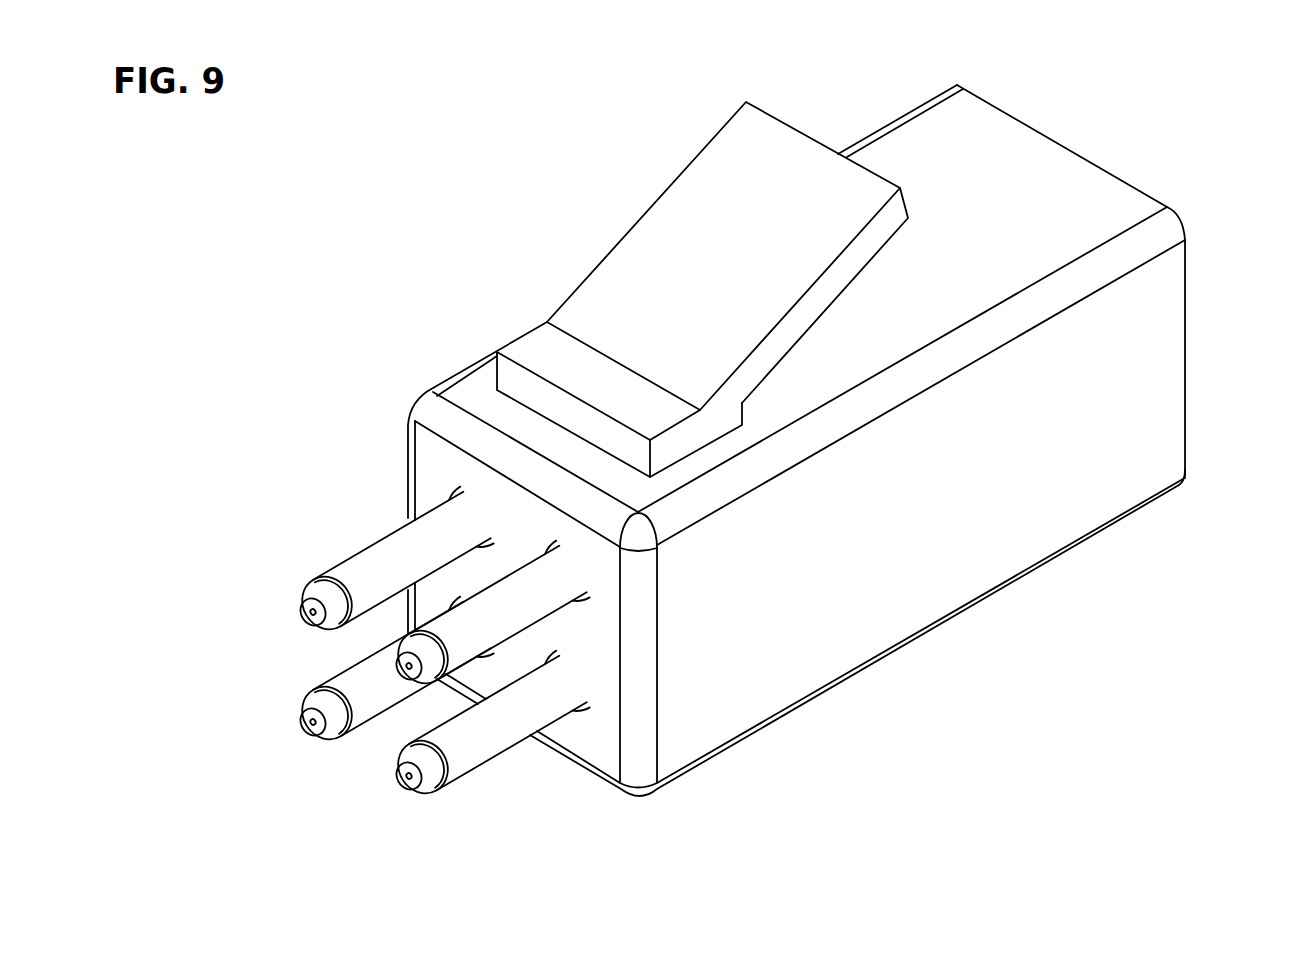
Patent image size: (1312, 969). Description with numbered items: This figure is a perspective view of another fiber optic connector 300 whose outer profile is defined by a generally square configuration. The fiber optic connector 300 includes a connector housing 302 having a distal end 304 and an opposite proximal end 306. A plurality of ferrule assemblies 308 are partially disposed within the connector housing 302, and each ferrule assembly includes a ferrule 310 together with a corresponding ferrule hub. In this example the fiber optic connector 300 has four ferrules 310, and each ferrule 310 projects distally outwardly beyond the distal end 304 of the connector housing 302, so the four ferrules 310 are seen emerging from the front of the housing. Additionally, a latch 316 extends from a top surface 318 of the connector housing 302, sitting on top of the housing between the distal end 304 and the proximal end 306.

The fiber optic connector 300 is at (453, 153).
The connector housing 302 is at (938, 627).
The distal end 304 is at (590, 777).
The proximal end 306 is at (1182, 405).
The ferrule assemblies 308 is at (485, 780).
The ferrule 310 is at (303, 600).
The latch 316 is at (645, 212).
The top surface 318 is at (913, 143).